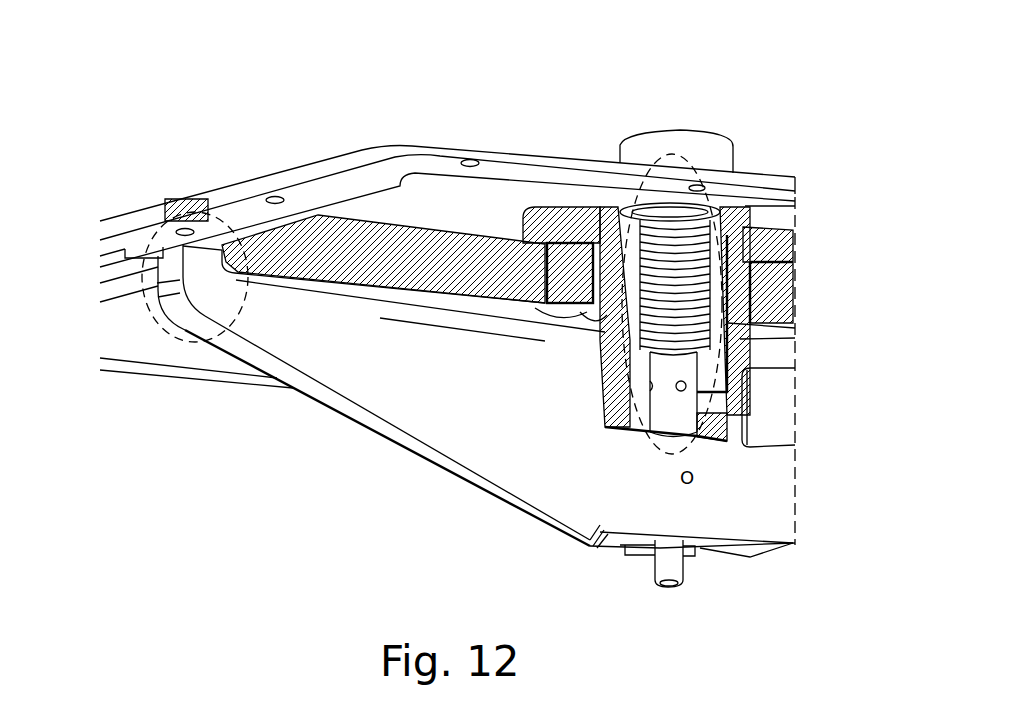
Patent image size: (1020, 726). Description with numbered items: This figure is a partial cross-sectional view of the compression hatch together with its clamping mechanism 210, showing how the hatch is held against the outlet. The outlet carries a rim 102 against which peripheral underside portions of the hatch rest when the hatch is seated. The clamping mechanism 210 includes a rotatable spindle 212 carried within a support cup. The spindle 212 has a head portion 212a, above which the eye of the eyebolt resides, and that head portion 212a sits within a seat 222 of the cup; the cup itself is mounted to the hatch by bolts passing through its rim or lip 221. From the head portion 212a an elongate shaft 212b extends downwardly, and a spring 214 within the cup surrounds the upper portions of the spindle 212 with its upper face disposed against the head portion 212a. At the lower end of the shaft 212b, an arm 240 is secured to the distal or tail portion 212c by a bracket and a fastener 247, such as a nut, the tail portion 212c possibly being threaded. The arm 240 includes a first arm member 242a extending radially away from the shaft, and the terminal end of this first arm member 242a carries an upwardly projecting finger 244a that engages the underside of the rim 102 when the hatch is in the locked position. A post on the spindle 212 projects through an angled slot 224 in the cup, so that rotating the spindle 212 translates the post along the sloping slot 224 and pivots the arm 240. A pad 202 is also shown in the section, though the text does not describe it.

The rim 102 is at (247, 197).
The pad 202 is at (400, 245).
The clamping mechanism 210 is at (215, 530).
The spindle 212 is at (615, 399).
The spring 214 is at (284, 401).
The head portion 212a is at (622, 152).
The elongate shaft 212b is at (605, 370).
The distal or tail portion 212c is at (670, 568).
The rim or lip 221 is at (535, 242).
The seat 222 is at (550, 208).
The angled slot 224 is at (732, 404).
The arm 240 is at (607, 500).
The first arm member 242a is at (343, 343).
The first upwardly projecting finger 244a is at (185, 350).
The fastener 247 is at (657, 580).